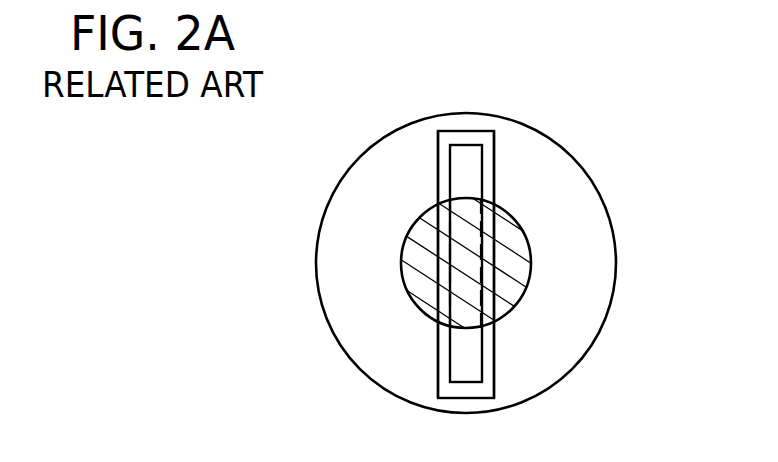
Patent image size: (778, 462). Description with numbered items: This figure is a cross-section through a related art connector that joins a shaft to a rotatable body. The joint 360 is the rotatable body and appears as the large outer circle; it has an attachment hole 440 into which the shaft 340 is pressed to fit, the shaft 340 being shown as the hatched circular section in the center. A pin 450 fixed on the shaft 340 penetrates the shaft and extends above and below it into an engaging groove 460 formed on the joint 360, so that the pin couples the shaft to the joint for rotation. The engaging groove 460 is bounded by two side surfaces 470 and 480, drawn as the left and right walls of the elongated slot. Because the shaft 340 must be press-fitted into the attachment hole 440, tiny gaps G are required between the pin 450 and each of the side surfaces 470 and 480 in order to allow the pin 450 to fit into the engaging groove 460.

The shaft 340 is at (532, 267).
The joint 360 is at (612, 222).
The attachment hole 440 is at (402, 245).
The pin 450 is at (473, 352).
The engaging groove 460 is at (468, 138).
The side surface 470 is at (438, 166).
The side surface 480 is at (494, 168).
The gap G is at (485, 368).